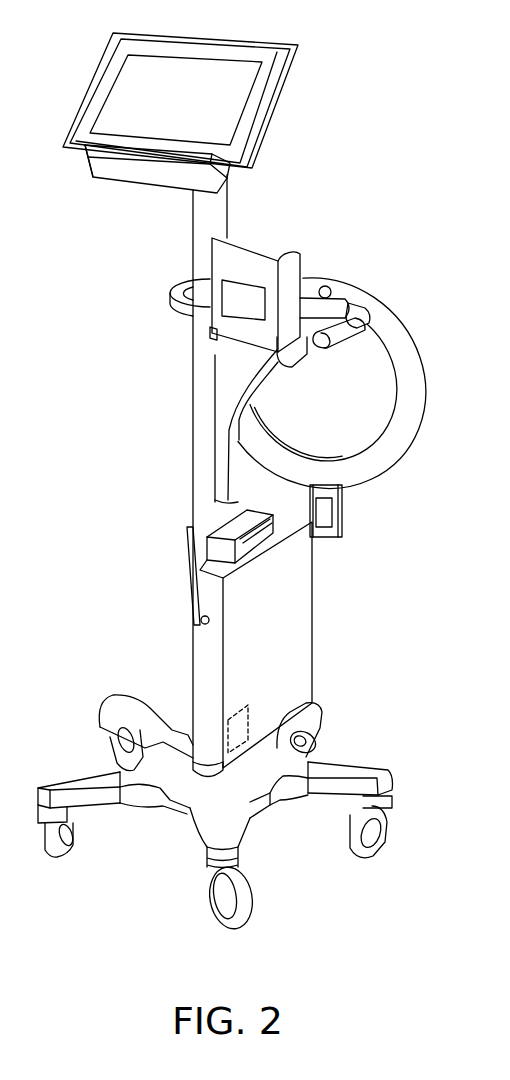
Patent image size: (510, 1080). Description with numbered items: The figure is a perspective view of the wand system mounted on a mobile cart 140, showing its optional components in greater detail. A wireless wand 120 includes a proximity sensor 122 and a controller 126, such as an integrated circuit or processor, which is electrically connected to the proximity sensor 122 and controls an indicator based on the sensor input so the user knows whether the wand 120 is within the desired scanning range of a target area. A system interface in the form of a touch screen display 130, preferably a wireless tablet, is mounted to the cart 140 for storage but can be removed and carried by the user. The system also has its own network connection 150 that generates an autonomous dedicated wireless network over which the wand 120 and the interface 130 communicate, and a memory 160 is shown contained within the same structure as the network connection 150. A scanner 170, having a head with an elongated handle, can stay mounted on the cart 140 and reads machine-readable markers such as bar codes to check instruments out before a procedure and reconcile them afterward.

The wand 120 is at (427, 403).
The proximity sensor 122 is at (333, 292).
The controller 126 is at (333, 510).
The touch screen display 130 is at (143, 92).
The mobile cart 140 is at (203, 503).
The network connection 150 is at (302, 608).
The memory 160 is at (233, 740).
The scanner 170 is at (293, 273).